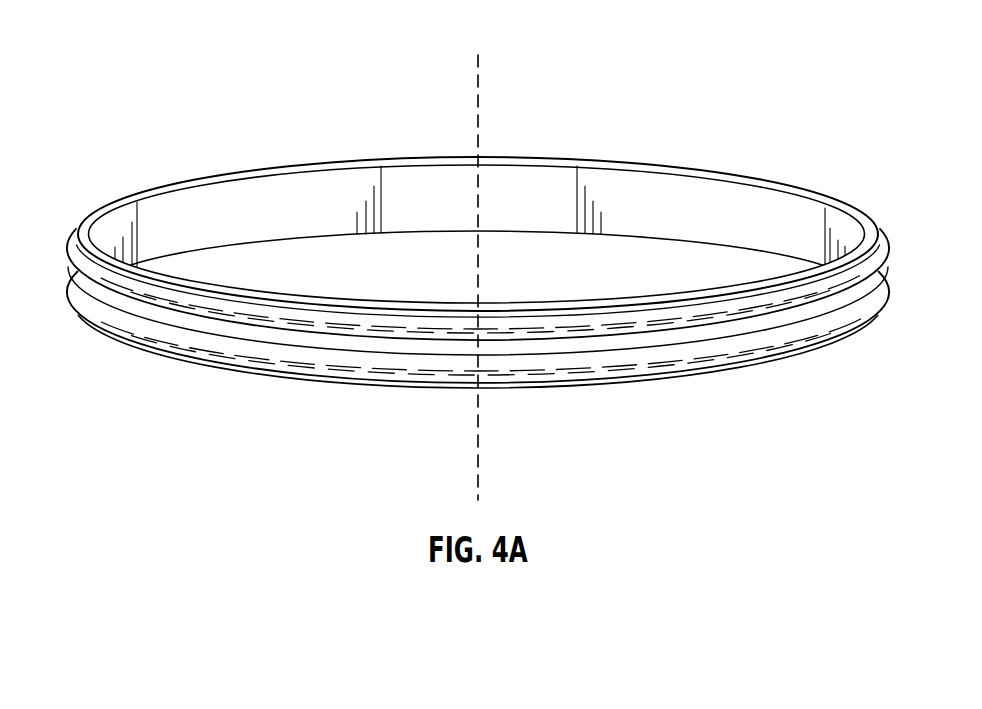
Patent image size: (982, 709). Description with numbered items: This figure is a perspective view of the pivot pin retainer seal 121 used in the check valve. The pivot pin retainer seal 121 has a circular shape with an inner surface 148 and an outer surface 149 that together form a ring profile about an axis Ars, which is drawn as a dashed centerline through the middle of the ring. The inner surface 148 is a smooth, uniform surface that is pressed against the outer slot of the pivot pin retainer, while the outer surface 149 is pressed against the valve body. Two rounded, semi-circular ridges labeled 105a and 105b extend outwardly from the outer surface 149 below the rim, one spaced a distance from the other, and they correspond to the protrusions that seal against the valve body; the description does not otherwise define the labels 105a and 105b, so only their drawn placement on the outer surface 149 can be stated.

The pivot pin retainer seal 121 is at (113, 47).
The axis Ars is at (480, 85).
The inner surface 148 is at (632, 192).
The outer surface 149 is at (752, 288).
The first rib 105a is at (322, 321).
The second rib 105b is at (368, 370).